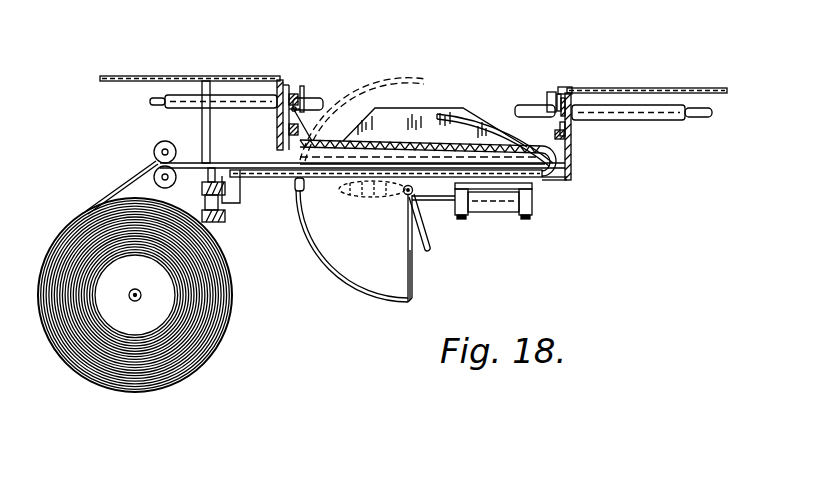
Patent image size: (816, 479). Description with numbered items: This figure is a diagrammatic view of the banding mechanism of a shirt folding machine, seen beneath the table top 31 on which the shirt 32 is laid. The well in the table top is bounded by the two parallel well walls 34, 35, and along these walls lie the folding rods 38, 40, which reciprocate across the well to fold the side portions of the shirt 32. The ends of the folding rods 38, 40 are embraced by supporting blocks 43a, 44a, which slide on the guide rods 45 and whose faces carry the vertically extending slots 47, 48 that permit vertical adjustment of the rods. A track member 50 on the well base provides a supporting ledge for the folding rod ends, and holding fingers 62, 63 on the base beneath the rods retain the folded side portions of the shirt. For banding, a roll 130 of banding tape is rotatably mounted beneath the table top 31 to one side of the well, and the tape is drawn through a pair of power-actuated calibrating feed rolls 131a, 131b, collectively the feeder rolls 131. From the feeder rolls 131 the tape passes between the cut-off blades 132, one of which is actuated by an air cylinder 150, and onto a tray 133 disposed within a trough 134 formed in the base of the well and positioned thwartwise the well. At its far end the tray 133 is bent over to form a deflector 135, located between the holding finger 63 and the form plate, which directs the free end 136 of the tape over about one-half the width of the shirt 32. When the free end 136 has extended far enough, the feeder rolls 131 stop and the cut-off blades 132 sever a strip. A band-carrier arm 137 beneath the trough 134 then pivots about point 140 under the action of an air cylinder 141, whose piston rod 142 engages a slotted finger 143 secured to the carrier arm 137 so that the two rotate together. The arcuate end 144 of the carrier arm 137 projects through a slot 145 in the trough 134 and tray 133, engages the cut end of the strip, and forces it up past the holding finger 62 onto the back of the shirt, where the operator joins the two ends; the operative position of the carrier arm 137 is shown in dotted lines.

The table top 31 is at (153, 76).
The cut-off blades 132 is at (203, 138).
The well wall 34 is at (276, 118).
The holding finger 62 is at (289, 128).
The supporting block 43a is at (289, 97).
The slot 47 is at (296, 106).
The folding rod 38 is at (304, 100).
The guide rod 45 is at (151, 104).
The track member 50 is at (420, 116).
The free end of the tape 136 is at (450, 115).
The shirt 32 is at (395, 139).
The tray 133 is at (262, 172).
The trough 134 is at (556, 181).
The deflector 135 is at (572, 166).
The well wall 35 is at (573, 97).
The holding finger 63 is at (566, 142).
The slot 48 is at (550, 97).
The supporting block 44a is at (558, 95).
The folding rod 40 is at (562, 108).
The calibrating feed roll 131a is at (154, 149).
The calibrating feed roll 131b is at (176, 182).
The feeder rolls 131 is at (152, 164).
The roll of banding tape 130 is at (155, 393).
The air cylinder 150 is at (226, 219).
The end of the carrier arm 144 is at (335, 272).
The slot 145 is at (304, 187).
The pivot point 140 is at (405, 196).
The slotted finger 143 is at (430, 249).
The band-carrier arm 137 is at (414, 287).
The piston rod 142 is at (460, 206).
The air cylinder 141 is at (505, 213).